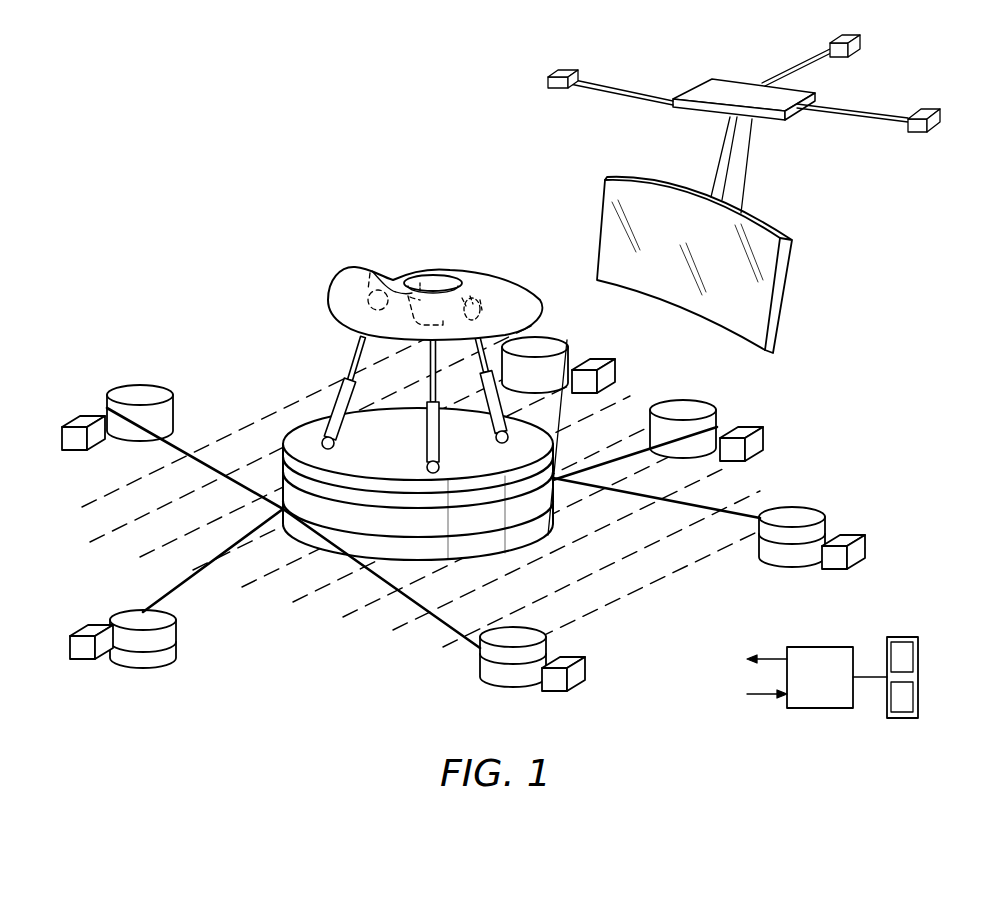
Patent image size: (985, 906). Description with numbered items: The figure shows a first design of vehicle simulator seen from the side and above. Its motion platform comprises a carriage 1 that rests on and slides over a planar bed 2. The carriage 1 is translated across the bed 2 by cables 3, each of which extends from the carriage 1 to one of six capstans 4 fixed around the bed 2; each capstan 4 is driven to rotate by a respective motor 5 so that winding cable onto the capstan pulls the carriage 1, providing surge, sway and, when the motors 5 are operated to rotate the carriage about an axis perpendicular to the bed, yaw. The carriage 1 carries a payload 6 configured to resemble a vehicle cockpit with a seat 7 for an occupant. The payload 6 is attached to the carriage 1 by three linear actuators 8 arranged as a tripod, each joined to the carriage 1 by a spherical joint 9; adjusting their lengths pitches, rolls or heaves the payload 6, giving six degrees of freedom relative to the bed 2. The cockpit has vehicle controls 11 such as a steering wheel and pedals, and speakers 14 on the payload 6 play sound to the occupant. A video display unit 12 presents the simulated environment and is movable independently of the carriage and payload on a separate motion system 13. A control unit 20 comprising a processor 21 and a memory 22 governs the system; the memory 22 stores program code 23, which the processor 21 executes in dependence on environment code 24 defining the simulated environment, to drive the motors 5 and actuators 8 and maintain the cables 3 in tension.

The carriage 1 is at (300, 432).
The planar bed 2 is at (668, 590).
The cables 3 is at (210, 465).
The capstans 4 is at (140, 393).
The motor 5 is at (62, 438).
The payload 6 is at (310, 288).
The seat 7 is at (418, 271).
The linear actuators 8 is at (357, 357).
The spherical joint 9 is at (427, 465).
The vehicle controls 11 is at (482, 292).
The video display unit 12 is at (793, 262).
The motion system 13 is at (868, 77).
The speakers 14 is at (373, 268).
The control unit 20 is at (840, 731).
The processor 21 is at (830, 647).
The memory 22 is at (902, 637).
The program code 23 is at (913, 654).
The environment code 24 is at (913, 694).